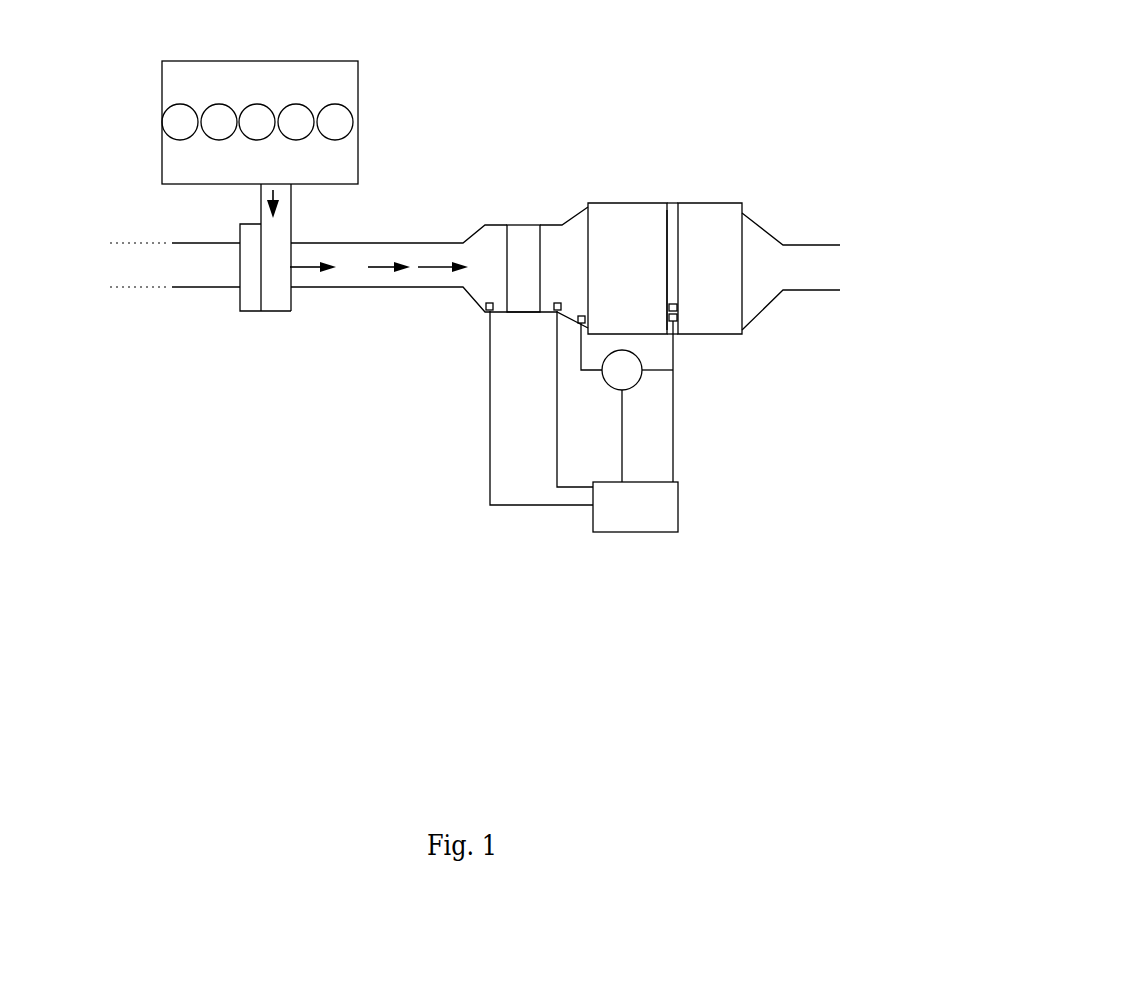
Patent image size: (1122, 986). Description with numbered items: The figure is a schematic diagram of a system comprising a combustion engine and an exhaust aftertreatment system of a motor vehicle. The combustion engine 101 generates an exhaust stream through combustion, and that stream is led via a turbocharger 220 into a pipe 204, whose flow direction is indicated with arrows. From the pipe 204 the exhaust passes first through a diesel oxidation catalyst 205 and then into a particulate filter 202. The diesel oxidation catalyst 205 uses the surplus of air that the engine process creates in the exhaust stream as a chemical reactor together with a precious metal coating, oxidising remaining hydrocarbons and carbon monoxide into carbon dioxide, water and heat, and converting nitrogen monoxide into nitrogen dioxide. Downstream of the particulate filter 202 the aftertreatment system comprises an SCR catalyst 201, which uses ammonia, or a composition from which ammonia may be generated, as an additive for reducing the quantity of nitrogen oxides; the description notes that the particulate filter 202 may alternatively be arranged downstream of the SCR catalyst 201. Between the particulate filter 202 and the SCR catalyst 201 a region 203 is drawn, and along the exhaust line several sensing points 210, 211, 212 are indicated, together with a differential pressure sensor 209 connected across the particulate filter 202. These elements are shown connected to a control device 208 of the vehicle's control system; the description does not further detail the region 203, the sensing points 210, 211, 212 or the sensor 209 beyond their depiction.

The combustion engine 101 is at (320, 72).
The turbocharger 220 is at (256, 323).
The pipe 204 is at (430, 250).
The diesel oxidation catalyst 205 is at (538, 227).
The particulate filter 202 is at (645, 210).
The SCR catalyst 201 is at (735, 218).
The gap between DPF and SCR 203 is at (688, 240).
The sensor upstream of DOC 210 is at (481, 313).
The sensor between DOC and DPF 211 is at (548, 316).
The sensor between DPF and SCR 212 is at (683, 318).
The differential pressure sensor 209 is at (640, 382).
The control device 208 is at (630, 523).